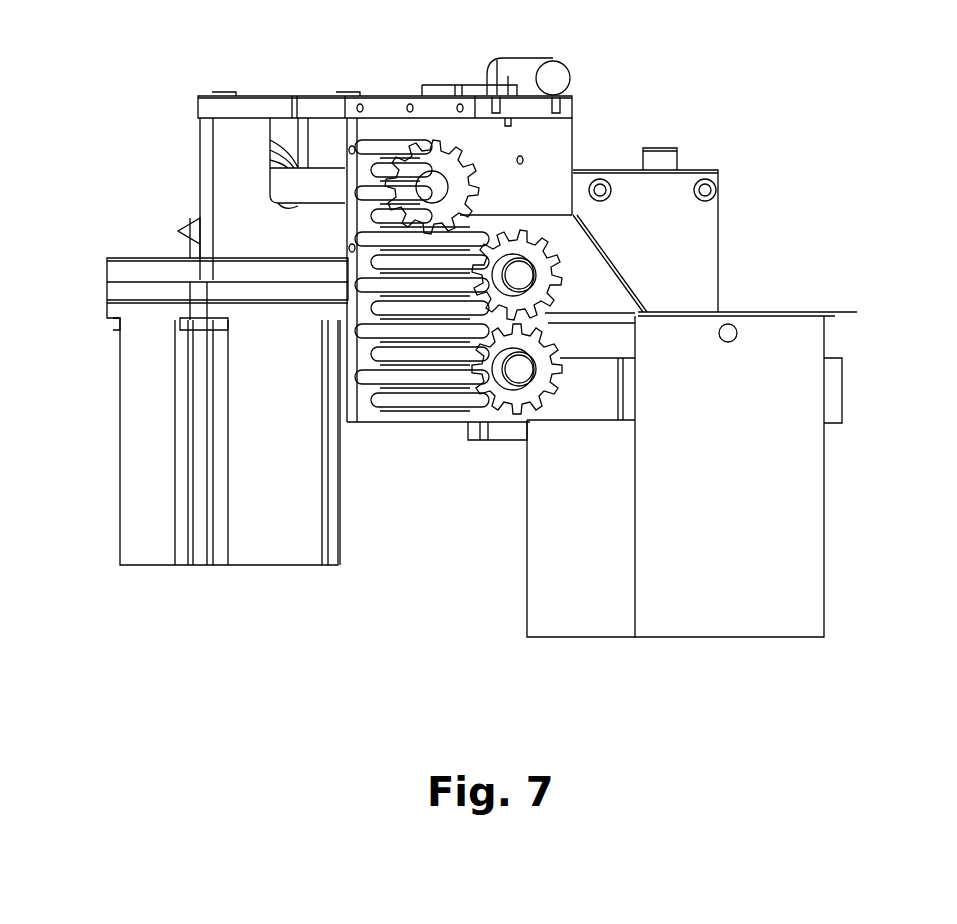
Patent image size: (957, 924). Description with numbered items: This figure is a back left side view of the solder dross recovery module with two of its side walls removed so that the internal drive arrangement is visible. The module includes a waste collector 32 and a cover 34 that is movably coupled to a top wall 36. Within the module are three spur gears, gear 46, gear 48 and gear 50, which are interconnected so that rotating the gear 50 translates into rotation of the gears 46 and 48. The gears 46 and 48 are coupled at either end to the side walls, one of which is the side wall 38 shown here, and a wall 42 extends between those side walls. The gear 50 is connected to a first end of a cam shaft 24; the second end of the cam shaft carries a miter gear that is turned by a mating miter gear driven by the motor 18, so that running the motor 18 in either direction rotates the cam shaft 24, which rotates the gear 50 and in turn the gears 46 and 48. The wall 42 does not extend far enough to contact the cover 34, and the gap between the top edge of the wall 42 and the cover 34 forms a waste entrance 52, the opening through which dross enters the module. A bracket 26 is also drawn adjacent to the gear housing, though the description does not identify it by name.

The motor 18 is at (135, 466).
The cam shaft 24 is at (322, 188).
The support bracket 26 is at (698, 213).
The waste collector 32 is at (713, 622).
The cover 34 is at (600, 287).
The top wall 36 is at (388, 105).
The side wall 38 is at (368, 412).
The wall 42 is at (575, 622).
The gear 46 is at (430, 412).
The gear 48 is at (560, 230).
The gear 50 is at (462, 193).
The waste entrance 52 is at (578, 318).